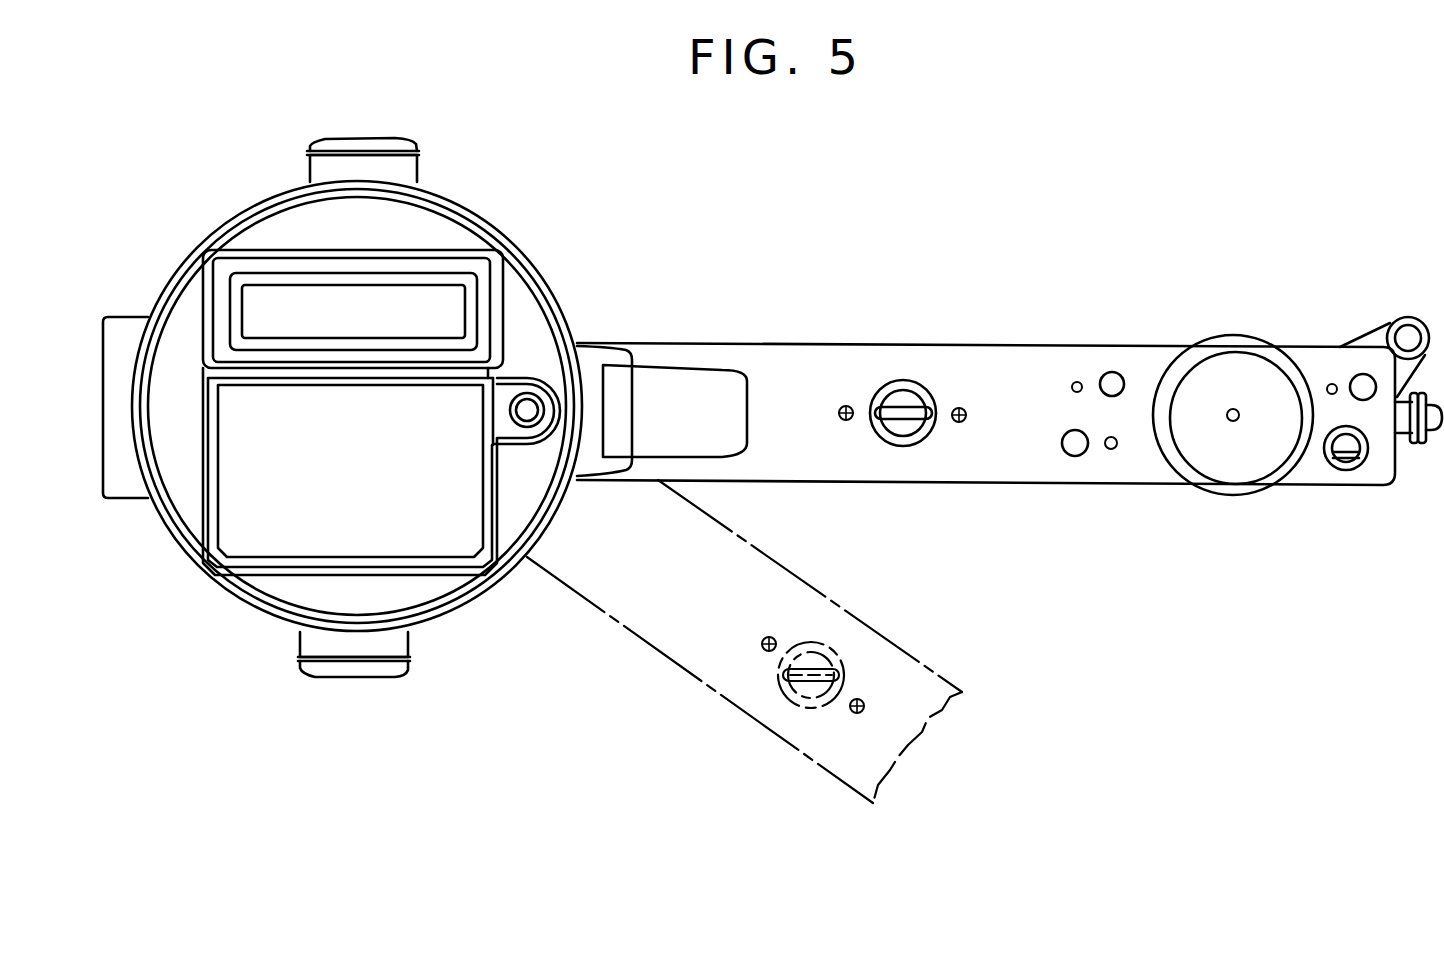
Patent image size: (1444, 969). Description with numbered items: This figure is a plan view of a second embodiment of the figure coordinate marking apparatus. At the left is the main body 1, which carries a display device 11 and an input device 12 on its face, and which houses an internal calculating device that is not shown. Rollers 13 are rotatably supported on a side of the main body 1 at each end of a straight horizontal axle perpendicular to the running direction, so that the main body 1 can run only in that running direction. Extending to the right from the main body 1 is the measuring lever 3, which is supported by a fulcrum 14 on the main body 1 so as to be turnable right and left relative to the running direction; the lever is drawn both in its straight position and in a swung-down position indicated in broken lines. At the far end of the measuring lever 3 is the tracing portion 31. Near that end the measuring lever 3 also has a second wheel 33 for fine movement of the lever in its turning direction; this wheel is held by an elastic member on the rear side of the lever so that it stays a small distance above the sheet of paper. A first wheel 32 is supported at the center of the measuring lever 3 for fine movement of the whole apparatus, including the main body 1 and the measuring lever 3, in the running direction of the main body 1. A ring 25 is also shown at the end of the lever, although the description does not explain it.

The main body 1 is at (455, 600).
The measuring lever 3 is at (983, 482).
The display device 11 is at (437, 302).
The input device 12 is at (253, 538).
The rollers 13 is at (410, 143).
The fulcrum 14 is at (527, 408).
The ring 25 is at (1400, 322).
The tracing portion 31 is at (1215, 362).
The first wheel 32 is at (903, 408).
The second wheel 33 is at (1432, 442).